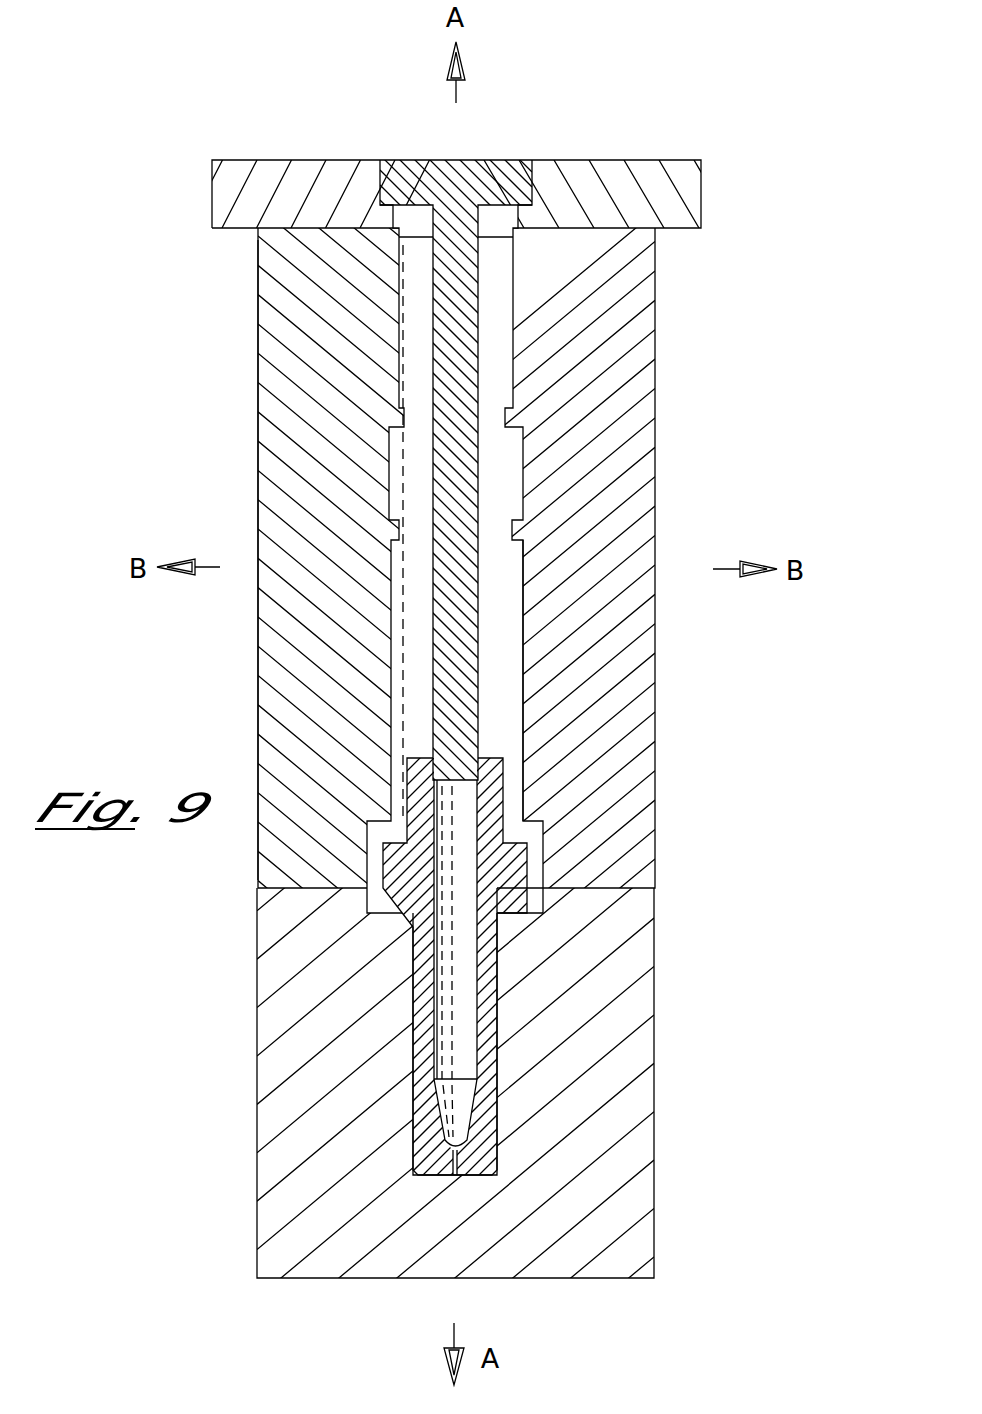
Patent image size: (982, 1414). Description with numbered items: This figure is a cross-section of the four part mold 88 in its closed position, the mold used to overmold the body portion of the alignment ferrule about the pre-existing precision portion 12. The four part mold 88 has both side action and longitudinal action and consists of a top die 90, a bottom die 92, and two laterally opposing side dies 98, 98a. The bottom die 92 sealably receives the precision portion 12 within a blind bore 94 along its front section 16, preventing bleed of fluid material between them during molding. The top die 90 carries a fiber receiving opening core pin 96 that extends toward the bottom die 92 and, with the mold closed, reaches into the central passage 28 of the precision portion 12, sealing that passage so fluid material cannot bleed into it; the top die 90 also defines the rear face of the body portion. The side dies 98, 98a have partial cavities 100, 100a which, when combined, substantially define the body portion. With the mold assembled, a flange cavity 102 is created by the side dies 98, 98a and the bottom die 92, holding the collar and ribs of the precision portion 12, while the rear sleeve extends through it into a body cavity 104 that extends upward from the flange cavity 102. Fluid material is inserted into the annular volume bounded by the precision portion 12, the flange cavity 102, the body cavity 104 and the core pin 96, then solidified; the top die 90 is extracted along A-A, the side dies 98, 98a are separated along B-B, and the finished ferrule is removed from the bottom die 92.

The precision portion 12 is at (607, 968).
The front section 16 is at (487, 1033).
The central passage 28 is at (482, 820).
The four part mold 88 is at (458, 717).
The top die 90 is at (702, 190).
The bottom die 92 is at (258, 1030).
The blind bore 94 is at (413, 1100).
The fiber receiving opening core pin 96 is at (478, 165).
The side die 98 is at (655, 717).
The side die 98a is at (258, 685).
The partial cavity 100 is at (505, 637).
The partial cavity 100a is at (417, 600).
The flange cavity 102 is at (533, 872).
The body cavity 104 is at (507, 557).